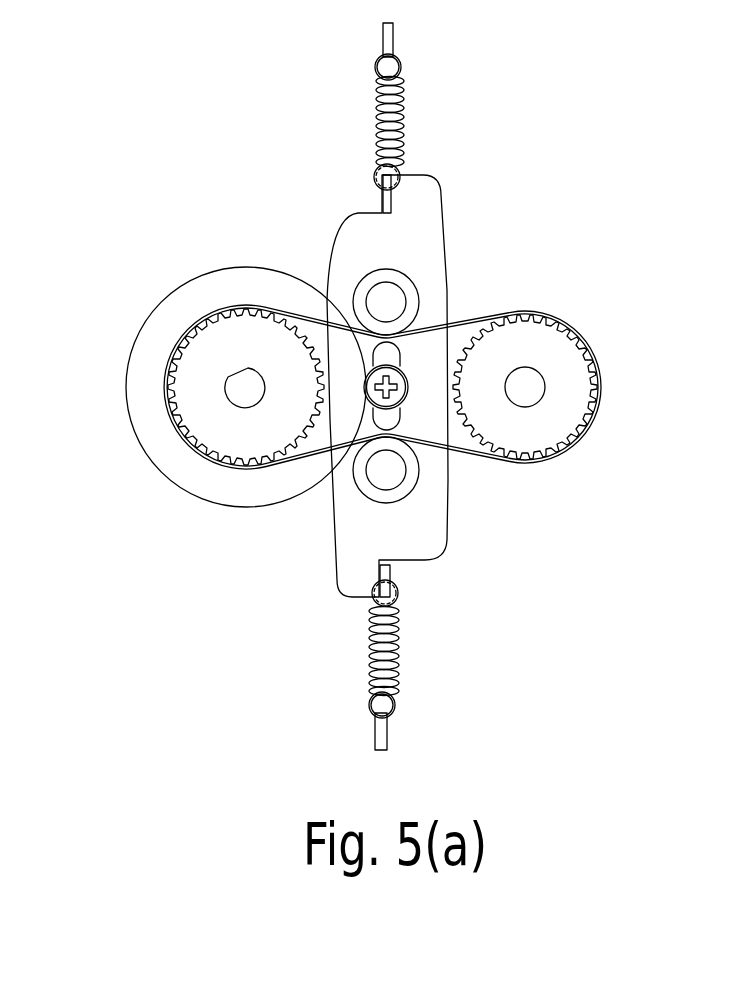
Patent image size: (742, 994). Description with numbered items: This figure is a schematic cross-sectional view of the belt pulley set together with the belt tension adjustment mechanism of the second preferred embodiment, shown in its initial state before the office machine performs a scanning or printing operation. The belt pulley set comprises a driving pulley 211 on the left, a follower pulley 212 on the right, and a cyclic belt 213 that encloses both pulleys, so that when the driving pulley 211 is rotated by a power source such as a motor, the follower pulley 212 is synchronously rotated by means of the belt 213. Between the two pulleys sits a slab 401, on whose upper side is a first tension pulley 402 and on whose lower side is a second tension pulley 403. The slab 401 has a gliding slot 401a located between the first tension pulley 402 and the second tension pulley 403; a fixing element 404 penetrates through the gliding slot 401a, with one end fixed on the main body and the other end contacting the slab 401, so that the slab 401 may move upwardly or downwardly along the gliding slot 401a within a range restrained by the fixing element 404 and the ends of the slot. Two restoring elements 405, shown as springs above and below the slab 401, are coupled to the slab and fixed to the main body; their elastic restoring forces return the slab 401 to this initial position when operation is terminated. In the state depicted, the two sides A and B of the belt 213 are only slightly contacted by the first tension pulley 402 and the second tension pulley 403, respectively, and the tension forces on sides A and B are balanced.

The driving pulley 211 is at (198, 308).
The follower pulley 212 is at (558, 368).
The belt 213 is at (593, 413).
The slab 401 is at (345, 520).
The gliding slot 401a is at (396, 348).
The first tension pulley 402 is at (384, 272).
The second tension pulley 403 is at (408, 485).
The fixing element 404 is at (407, 396).
The restoring element 405 is at (407, 103).
The side A of the belt A is at (415, 354).
The side B of the belt B is at (415, 421).